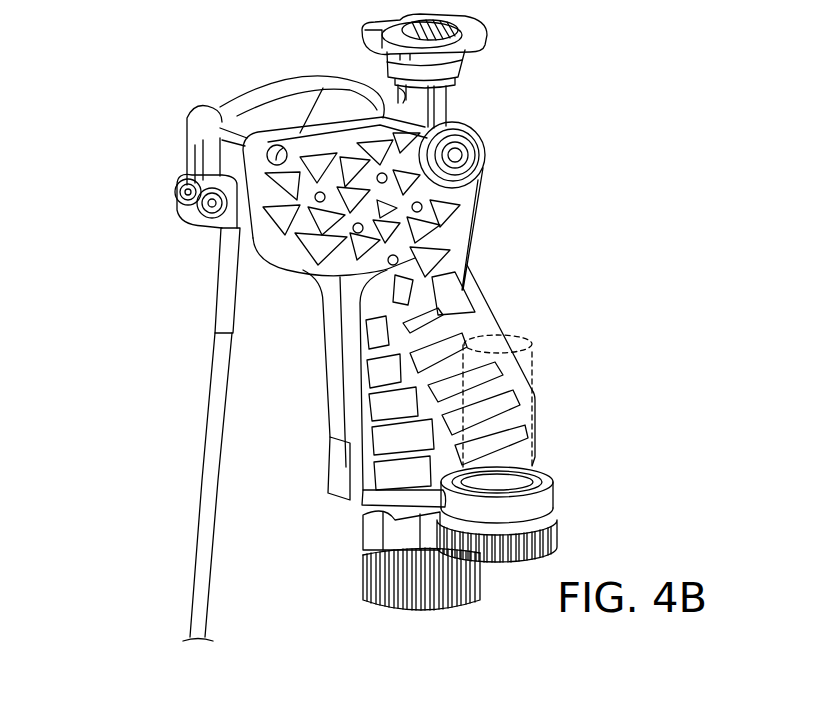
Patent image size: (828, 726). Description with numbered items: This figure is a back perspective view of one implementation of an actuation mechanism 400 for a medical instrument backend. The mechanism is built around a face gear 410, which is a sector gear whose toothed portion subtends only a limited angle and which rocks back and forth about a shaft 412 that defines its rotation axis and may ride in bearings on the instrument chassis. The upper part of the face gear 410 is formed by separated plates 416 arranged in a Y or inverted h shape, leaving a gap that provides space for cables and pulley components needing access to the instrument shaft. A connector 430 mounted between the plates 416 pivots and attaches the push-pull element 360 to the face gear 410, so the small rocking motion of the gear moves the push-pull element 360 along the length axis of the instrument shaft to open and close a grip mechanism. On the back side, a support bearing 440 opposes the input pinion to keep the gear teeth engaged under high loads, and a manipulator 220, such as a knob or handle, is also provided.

The actuation mechanism 400 is at (114, 45).
The plates 416 is at (269, 90).
The shaft 412 is at (484, 150).
The connector 430 is at (180, 193).
The push-pull element 360 is at (207, 493).
The face gear 410 is at (477, 294).
The manipulator 220 is at (362, 582).
The support bearing 440 is at (545, 498).